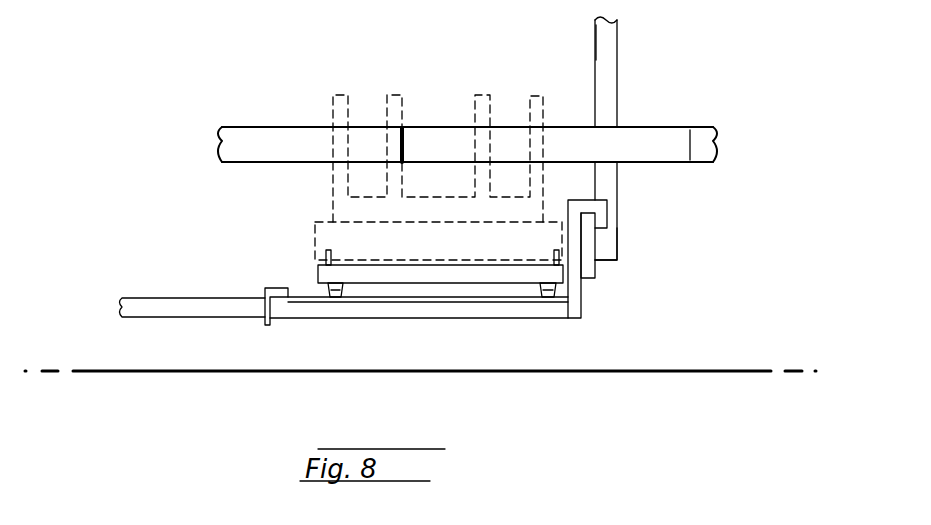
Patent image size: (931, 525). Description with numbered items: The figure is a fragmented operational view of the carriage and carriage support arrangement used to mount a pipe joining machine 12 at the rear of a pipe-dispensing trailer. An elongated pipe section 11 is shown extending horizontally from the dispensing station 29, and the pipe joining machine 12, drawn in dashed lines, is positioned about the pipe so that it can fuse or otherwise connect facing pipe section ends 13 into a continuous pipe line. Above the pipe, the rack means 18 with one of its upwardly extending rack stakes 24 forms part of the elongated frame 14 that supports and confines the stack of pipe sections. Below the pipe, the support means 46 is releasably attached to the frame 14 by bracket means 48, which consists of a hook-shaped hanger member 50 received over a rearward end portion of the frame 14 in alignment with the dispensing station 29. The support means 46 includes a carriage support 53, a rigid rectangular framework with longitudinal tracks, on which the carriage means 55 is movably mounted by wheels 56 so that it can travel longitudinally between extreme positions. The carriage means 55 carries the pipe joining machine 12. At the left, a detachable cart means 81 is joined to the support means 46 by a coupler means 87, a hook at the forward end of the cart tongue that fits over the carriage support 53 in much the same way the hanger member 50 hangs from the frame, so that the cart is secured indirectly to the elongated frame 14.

The pipe section 11 is at (232, 140).
The pipe joining machine 12 is at (340, 181).
The pipe section ends 13 is at (406, 138).
The elongated frame 14 is at (607, 252).
The rack means 18 is at (620, 39).
The rack stakes 24 is at (607, 70).
The dispensing station 29 is at (700, 114).
The support means 46 is at (491, 326).
The bracket means 48 is at (590, 208).
The hanger member 50 is at (602, 220).
The carriage support 53 is at (400, 310).
The carriage means 55 is at (423, 278).
The wheels 56 is at (335, 297).
The detachable cart means 81 is at (133, 310).
The coupler means 87 is at (250, 291).